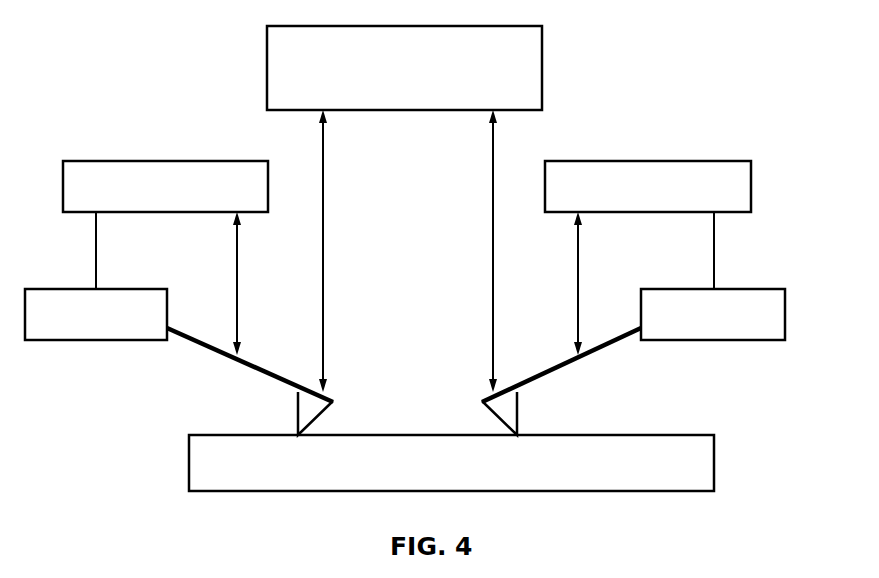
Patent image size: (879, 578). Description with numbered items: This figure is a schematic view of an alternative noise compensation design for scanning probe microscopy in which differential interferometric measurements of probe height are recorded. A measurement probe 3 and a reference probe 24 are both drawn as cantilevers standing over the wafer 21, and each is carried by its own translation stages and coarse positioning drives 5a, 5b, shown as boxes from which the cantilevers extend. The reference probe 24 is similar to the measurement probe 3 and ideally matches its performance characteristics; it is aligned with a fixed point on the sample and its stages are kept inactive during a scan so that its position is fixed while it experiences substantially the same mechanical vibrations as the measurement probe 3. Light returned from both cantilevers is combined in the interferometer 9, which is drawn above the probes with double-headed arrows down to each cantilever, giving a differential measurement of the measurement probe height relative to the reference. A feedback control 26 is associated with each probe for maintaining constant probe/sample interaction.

The interferometer 9 is at (394, 92).
The feedback control 26 is at (148, 197).
The translation stages 5a is at (405, 276).
The coarse positioning drives 5b is at (52, 327).
The wafer 21 is at (436, 473).
The reference probe 24 is at (241, 382).
The probe 3 is at (574, 383).